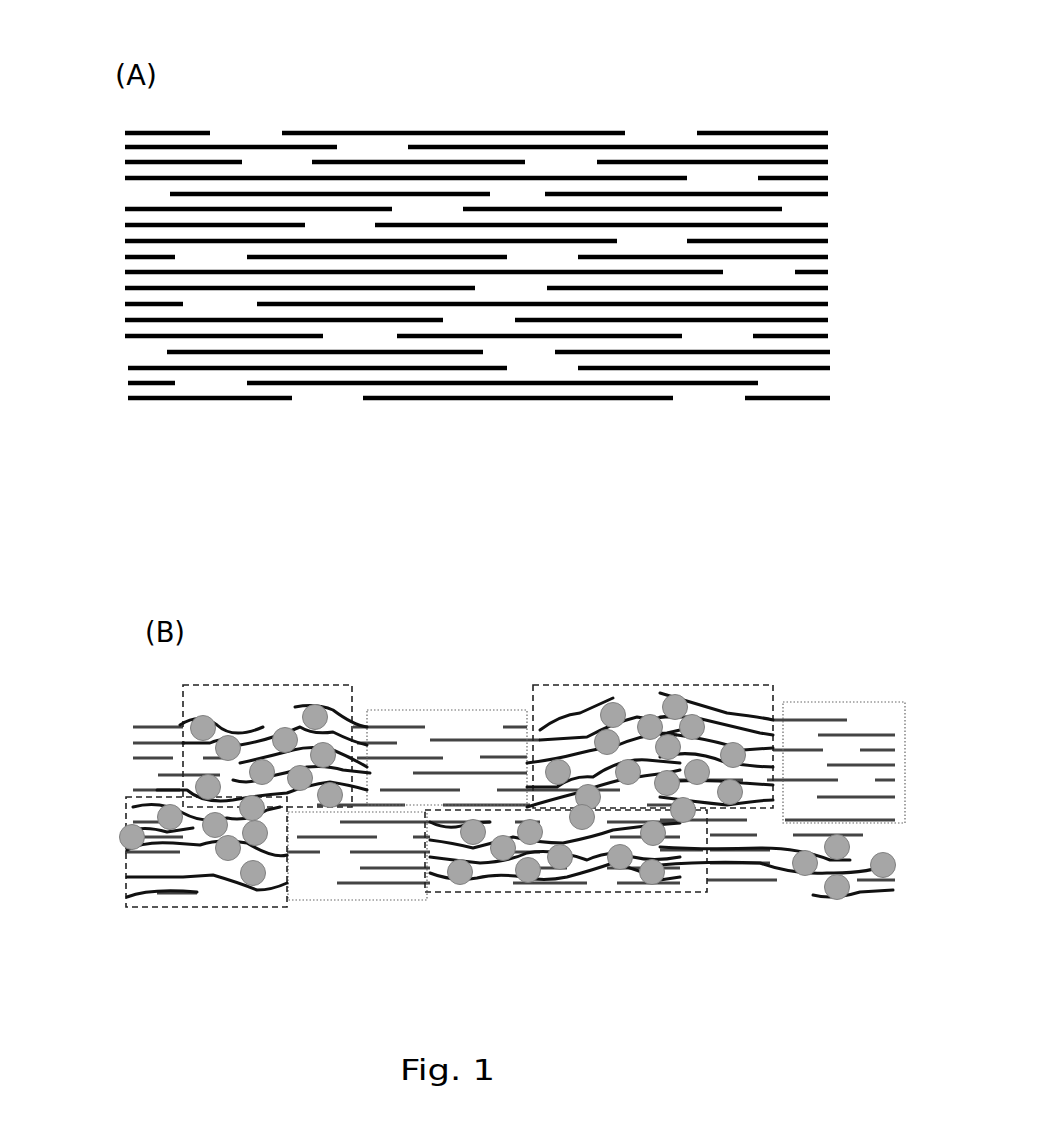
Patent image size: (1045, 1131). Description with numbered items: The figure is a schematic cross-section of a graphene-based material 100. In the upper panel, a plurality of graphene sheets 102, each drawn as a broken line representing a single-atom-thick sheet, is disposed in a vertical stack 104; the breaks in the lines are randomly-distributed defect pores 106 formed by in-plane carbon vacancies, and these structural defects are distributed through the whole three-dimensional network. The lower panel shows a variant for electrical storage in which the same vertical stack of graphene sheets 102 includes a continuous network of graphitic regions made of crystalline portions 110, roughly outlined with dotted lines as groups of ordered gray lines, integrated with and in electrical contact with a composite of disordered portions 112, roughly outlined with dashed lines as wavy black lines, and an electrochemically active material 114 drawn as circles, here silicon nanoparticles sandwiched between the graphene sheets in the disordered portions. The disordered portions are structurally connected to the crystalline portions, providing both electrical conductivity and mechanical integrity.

The graphene-based material 100 is at (738, 80).
The graphene sheets 102 is at (830, 311).
The vertical stack 104 is at (110, 133).
The defect pores 106 is at (654, 132).
The crystalline portions 110 is at (806, 700).
The disordered portions 112 is at (280, 683).
The electrochemically active material 114 is at (620, 850).